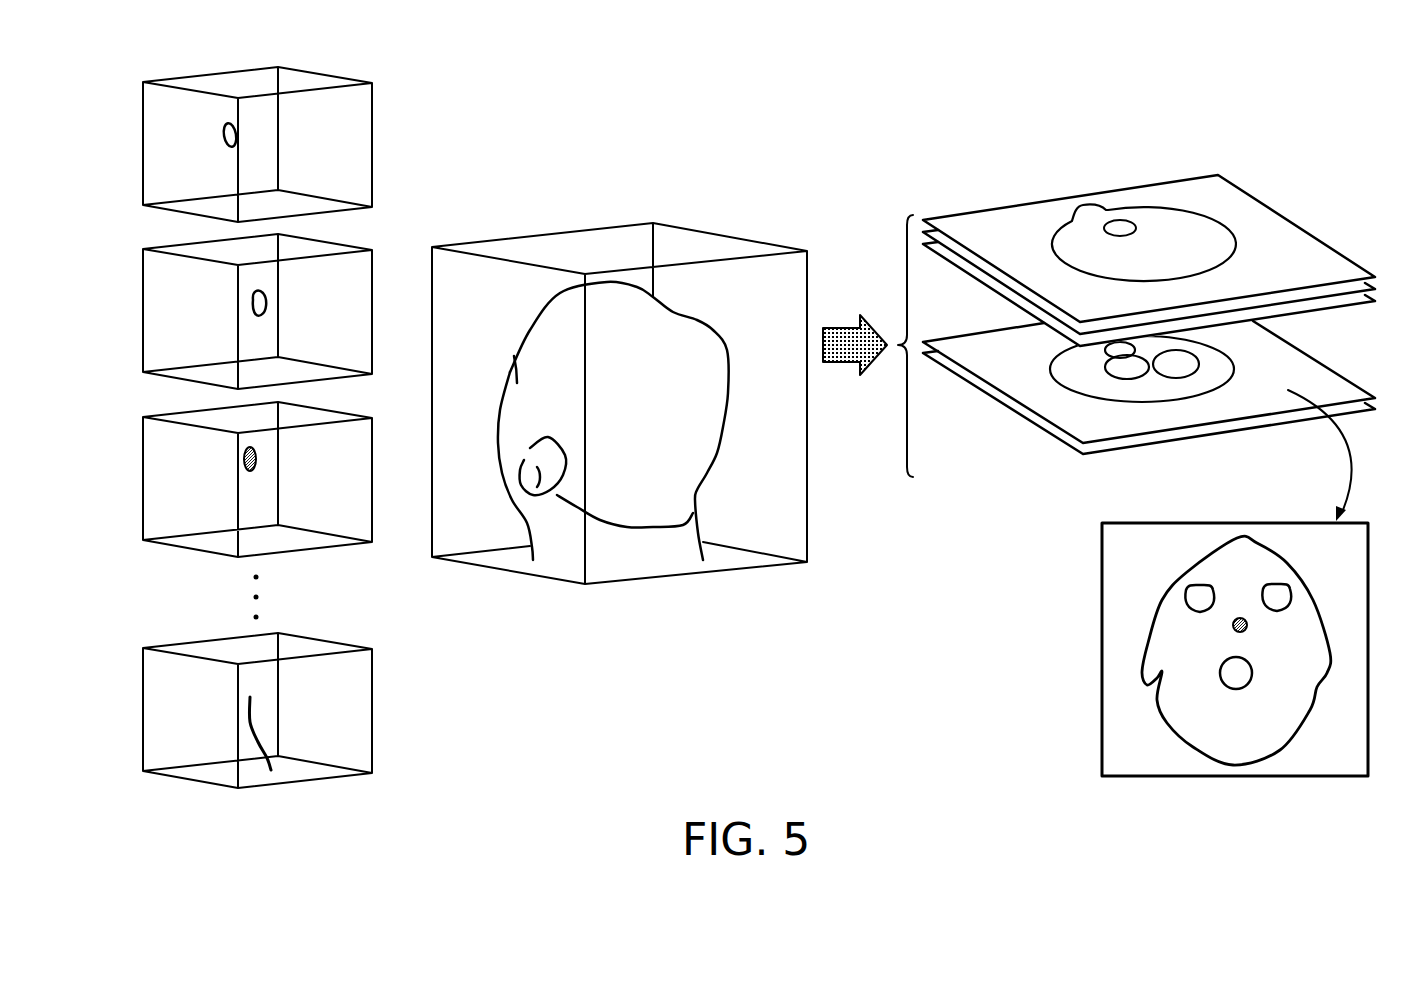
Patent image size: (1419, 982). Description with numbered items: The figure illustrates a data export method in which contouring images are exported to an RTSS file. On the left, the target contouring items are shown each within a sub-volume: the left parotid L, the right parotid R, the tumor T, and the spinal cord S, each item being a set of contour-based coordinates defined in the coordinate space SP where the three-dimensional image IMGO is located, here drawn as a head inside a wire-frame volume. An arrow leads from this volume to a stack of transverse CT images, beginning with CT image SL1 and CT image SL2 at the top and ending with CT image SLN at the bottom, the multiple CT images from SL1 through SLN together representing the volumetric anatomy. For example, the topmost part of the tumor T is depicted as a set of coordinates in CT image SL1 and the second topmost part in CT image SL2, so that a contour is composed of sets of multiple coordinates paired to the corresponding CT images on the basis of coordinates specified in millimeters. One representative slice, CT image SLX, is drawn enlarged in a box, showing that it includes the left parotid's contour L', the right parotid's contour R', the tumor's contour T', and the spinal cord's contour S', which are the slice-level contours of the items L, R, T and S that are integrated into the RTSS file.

The left parotid L is at (167, 139).
The right parotid R is at (179, 309).
The tumor T is at (175, 464).
The spinal cord S is at (183, 733).
The coordinate space SP is at (545, 232).
The 3D image IMGO is at (687, 313).
The CT image SL 1 SL1 is at (1262, 204).
The CT image SL 2 SL2 is at (1335, 303).
The CT image SLX is at (1198, 428).
The CT image SLN is at (1122, 450).
The left parotid's contour L' is at (1137, 600).
The right parotid's contour R' is at (1175, 617).
The tumor's contour T' is at (1153, 651).
The spinal cord's contour S' is at (1156, 689).